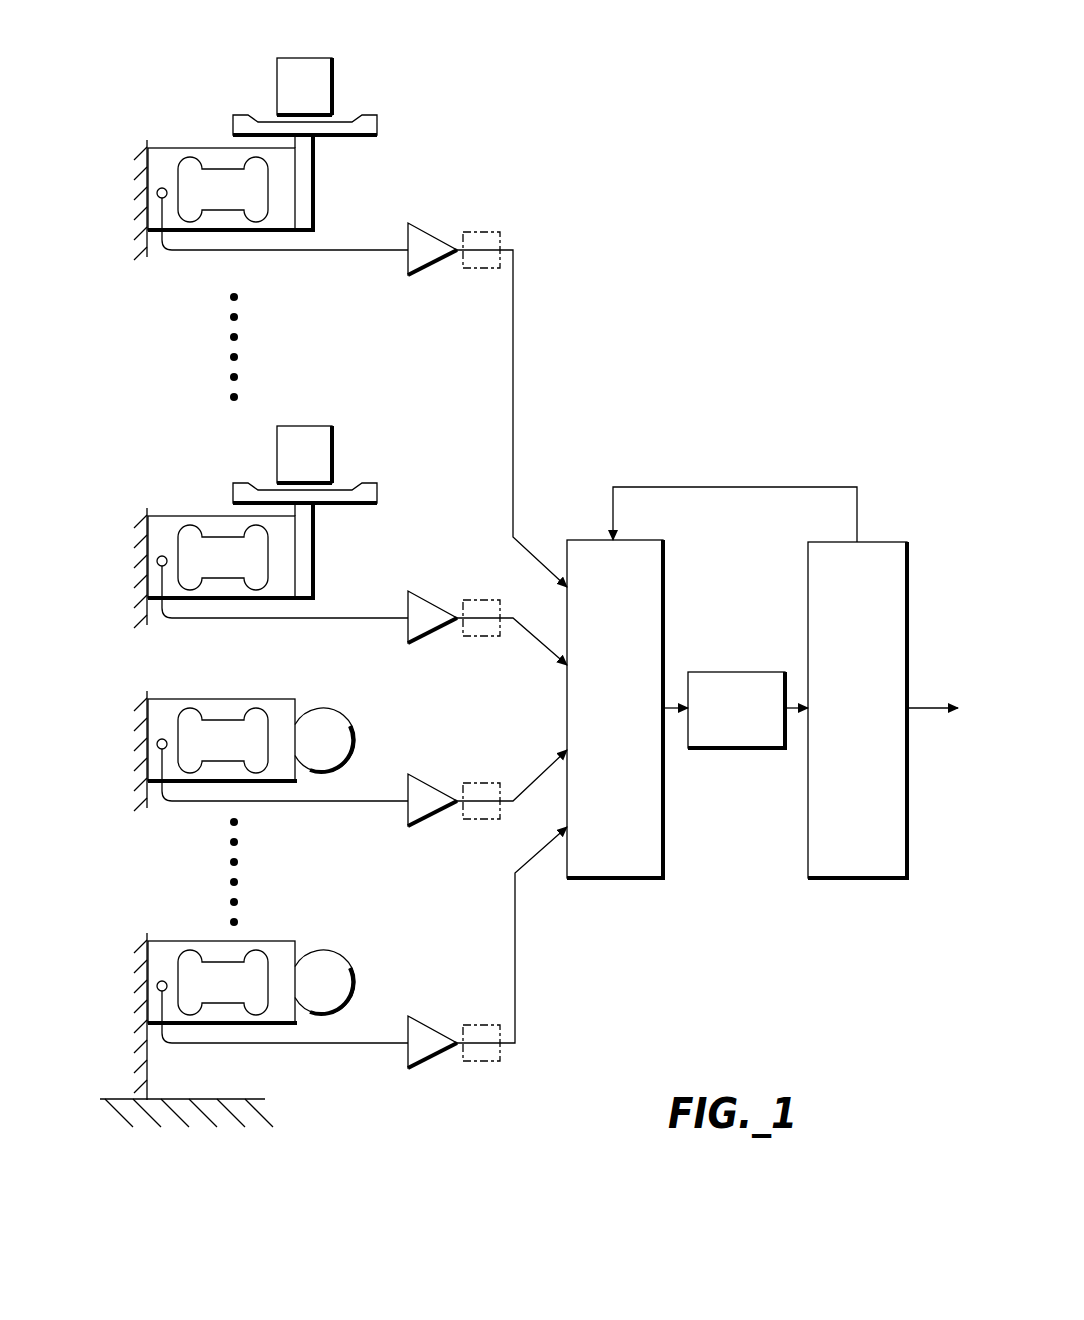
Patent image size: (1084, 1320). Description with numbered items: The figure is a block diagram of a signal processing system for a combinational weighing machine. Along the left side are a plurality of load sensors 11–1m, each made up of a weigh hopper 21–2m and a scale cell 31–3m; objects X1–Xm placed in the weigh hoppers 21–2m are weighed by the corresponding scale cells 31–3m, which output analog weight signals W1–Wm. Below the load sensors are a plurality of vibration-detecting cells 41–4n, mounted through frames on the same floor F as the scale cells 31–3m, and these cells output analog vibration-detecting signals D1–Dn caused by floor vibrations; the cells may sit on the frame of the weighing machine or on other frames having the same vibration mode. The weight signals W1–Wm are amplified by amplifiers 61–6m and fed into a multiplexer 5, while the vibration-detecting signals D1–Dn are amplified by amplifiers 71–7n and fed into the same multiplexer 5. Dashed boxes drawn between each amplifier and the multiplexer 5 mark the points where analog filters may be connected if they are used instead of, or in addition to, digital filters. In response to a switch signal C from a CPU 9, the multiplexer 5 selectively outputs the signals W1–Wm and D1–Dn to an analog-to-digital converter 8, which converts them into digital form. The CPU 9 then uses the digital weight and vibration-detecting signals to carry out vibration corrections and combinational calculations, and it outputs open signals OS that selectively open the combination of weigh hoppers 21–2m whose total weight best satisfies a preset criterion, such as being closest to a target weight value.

The load sensor 11 is at (271, 160).
The load sensor 1m is at (274, 517).
The weigh hopper 21 is at (368, 113).
The weigh hopper 2m is at (323, 527).
The scale cell 31 is at (203, 148).
The scale cell 3m is at (231, 543).
The vibration-detecting cell 41 is at (271, 743).
The vibration-detecting cell 4n is at (271, 997).
The multiplexer 5 is at (637, 540).
The amplifier 61 is at (415, 224).
The amplifier 6m is at (436, 607).
The amplifier 71 is at (434, 790).
The amplifier 7n is at (434, 1032).
The analog-to-digital (A/D) converter 8 is at (715, 672).
The CPU 9 is at (882, 542).
The object to be weighed X1 is at (316, 65).
The object to be weighed Xm is at (321, 444).
The analog weight signal W1 is at (332, 250).
The analog weight signal Wm is at (285, 592).
The analog vibration-detecting signal D1 is at (285, 775).
The analog vibration-detecting signal Dn is at (285, 1017).
The floor F is at (205, 1098).
The switch signal C is at (632, 487).
The open signals OS is at (913, 708).